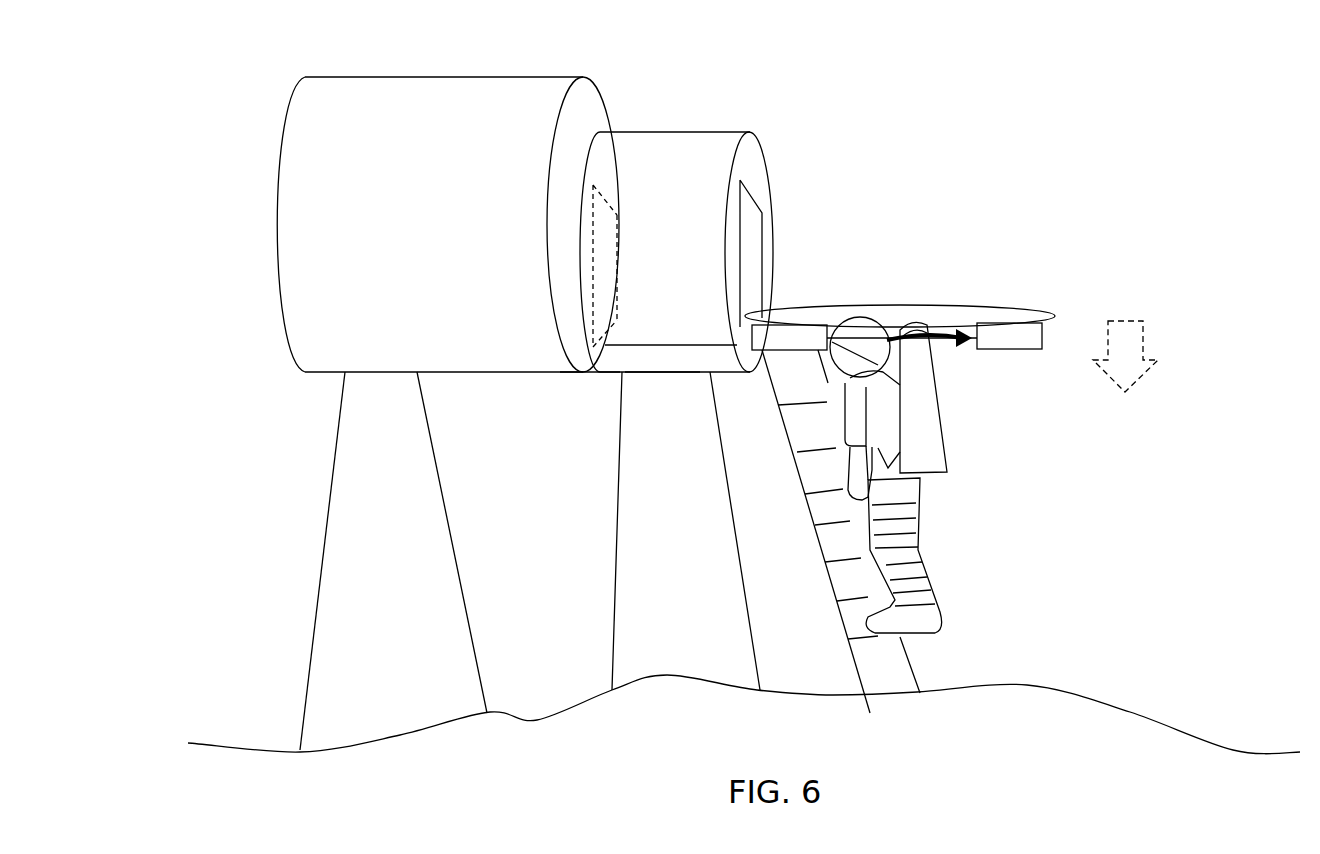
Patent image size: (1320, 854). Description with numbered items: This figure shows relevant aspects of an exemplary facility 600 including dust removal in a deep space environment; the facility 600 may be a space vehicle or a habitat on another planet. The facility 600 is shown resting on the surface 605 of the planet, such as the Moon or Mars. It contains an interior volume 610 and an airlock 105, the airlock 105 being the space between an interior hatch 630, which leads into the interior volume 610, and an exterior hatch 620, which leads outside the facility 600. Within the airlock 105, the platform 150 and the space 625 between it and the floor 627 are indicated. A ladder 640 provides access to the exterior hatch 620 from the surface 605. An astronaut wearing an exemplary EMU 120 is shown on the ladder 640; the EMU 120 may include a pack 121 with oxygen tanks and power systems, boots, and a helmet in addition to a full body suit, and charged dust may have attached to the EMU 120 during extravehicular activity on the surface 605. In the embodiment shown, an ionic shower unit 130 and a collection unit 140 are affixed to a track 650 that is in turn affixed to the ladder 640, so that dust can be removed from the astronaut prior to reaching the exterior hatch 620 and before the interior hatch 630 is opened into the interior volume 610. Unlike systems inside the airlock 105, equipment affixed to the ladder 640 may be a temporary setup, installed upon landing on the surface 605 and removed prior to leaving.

The facility 600 is at (245, 123).
The interior volume 610 is at (452, 231).
The airlock 105 is at (694, 278).
The platform 150 is at (677, 343).
The interior hatch 630 is at (603, 218).
The exterior hatch 620 is at (752, 232).
The space 625 is at (620, 357).
The floor 627 is at (650, 372).
The track 650 is at (962, 305).
The collection unit 140 is at (780, 335).
The ionic shower unit 130 is at (1000, 335).
The ladder 640 is at (807, 512).
The EMU 120 is at (914, 499).
The pack 121 is at (936, 442).
The surface 605 is at (1289, 737).